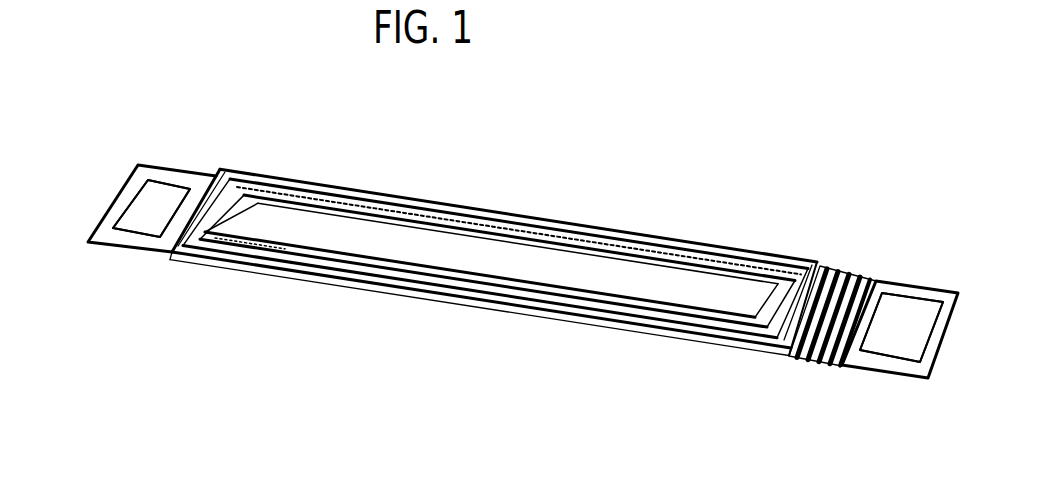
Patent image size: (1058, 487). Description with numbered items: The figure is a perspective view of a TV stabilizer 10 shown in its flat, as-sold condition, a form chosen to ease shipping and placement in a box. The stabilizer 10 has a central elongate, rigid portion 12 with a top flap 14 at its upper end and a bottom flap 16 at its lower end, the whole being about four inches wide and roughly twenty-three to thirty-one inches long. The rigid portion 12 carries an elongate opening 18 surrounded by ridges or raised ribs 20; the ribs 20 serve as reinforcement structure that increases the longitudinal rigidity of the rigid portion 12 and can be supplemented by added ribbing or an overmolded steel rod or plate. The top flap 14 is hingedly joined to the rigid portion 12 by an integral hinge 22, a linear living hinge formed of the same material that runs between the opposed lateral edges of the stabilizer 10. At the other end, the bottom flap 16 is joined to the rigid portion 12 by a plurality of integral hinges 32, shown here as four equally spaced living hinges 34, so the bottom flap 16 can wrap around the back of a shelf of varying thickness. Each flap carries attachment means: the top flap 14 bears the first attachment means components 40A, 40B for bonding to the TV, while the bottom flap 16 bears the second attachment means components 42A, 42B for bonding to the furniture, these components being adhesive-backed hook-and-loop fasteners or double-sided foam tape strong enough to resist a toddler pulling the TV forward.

The TV stabilizer 10 is at (420, 321).
The rigid portion 12 is at (273, 274).
The top flap 14 is at (142, 167).
The bottom flap 16 is at (922, 290).
The elongate opening 18 is at (372, 247).
The raised ribs 20 is at (505, 278).
The integral hinge 22 is at (172, 251).
The integral hinges 32 is at (847, 250).
The living hinges 34 is at (832, 365).
The first attachment means component 40A is at (155, 203).
The first attachment means component 40B is at (151, 208).
The second attachment means component 42A is at (902, 340).
The second attachment means component 42B is at (901, 327).